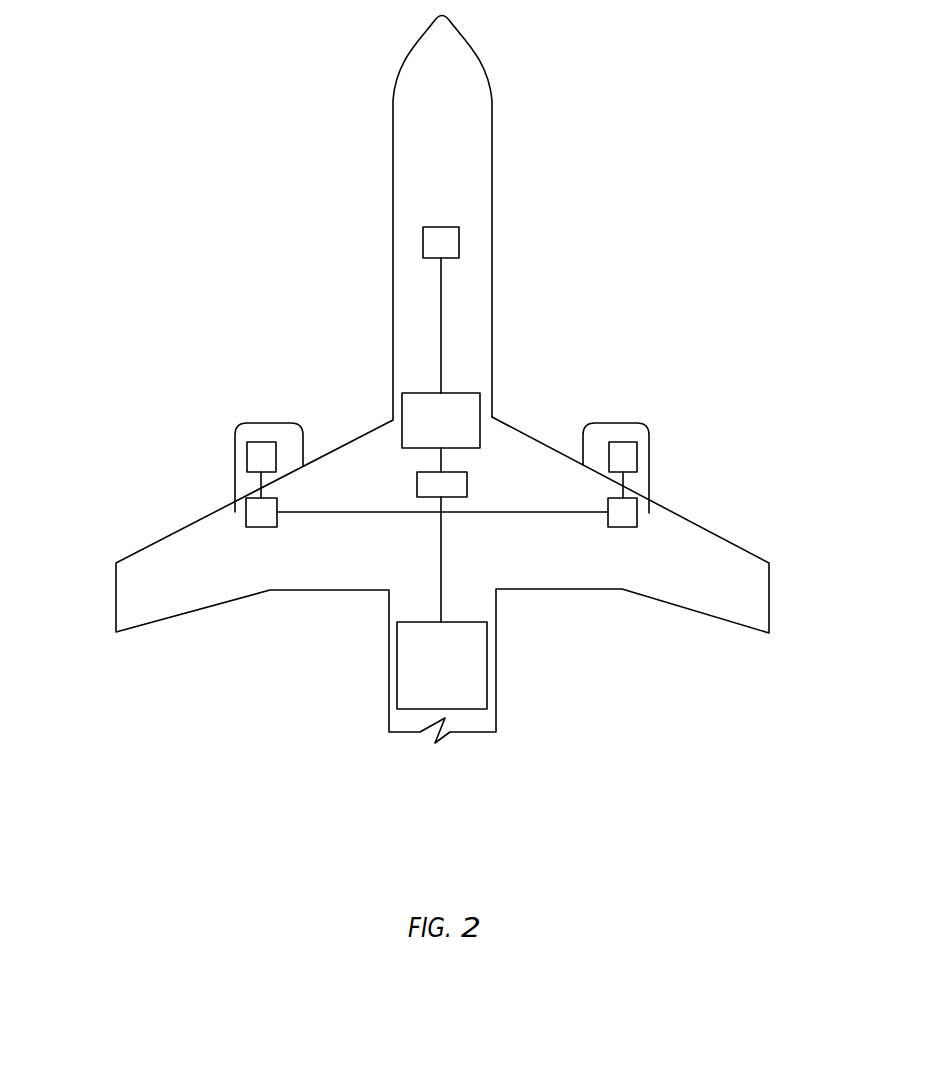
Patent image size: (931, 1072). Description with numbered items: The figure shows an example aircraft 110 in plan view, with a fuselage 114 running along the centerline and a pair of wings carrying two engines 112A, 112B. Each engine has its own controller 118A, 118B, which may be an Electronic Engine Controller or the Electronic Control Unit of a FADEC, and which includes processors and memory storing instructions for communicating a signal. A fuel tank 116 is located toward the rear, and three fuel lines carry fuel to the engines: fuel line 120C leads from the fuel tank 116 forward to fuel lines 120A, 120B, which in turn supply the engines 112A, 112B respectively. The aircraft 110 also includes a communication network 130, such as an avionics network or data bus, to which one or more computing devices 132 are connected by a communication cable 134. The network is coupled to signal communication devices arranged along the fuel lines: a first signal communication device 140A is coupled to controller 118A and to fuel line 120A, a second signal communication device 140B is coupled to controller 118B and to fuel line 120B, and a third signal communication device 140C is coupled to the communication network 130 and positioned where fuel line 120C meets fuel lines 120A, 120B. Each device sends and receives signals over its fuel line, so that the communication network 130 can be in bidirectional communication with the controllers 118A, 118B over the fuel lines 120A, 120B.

The aircraft 110 is at (120, 185).
The engine 112A is at (270, 423).
The engine 112B is at (613, 423).
The fuselage 114 is at (475, 321).
The fuel tank 116 is at (435, 700).
The controller 118A is at (262, 453).
The controller 118B is at (620, 455).
The fuel line 120A is at (300, 513).
The fuel line 120B is at (538, 510).
The fuel line 120C is at (442, 602).
The communication network 130 is at (402, 428).
The computing device 132 is at (423, 243).
The communication cable 134 is at (441, 287).
The first signal communication device 140A is at (247, 518).
The second signal communication device 140B is at (637, 518).
The third signal communication device 140C is at (467, 485).